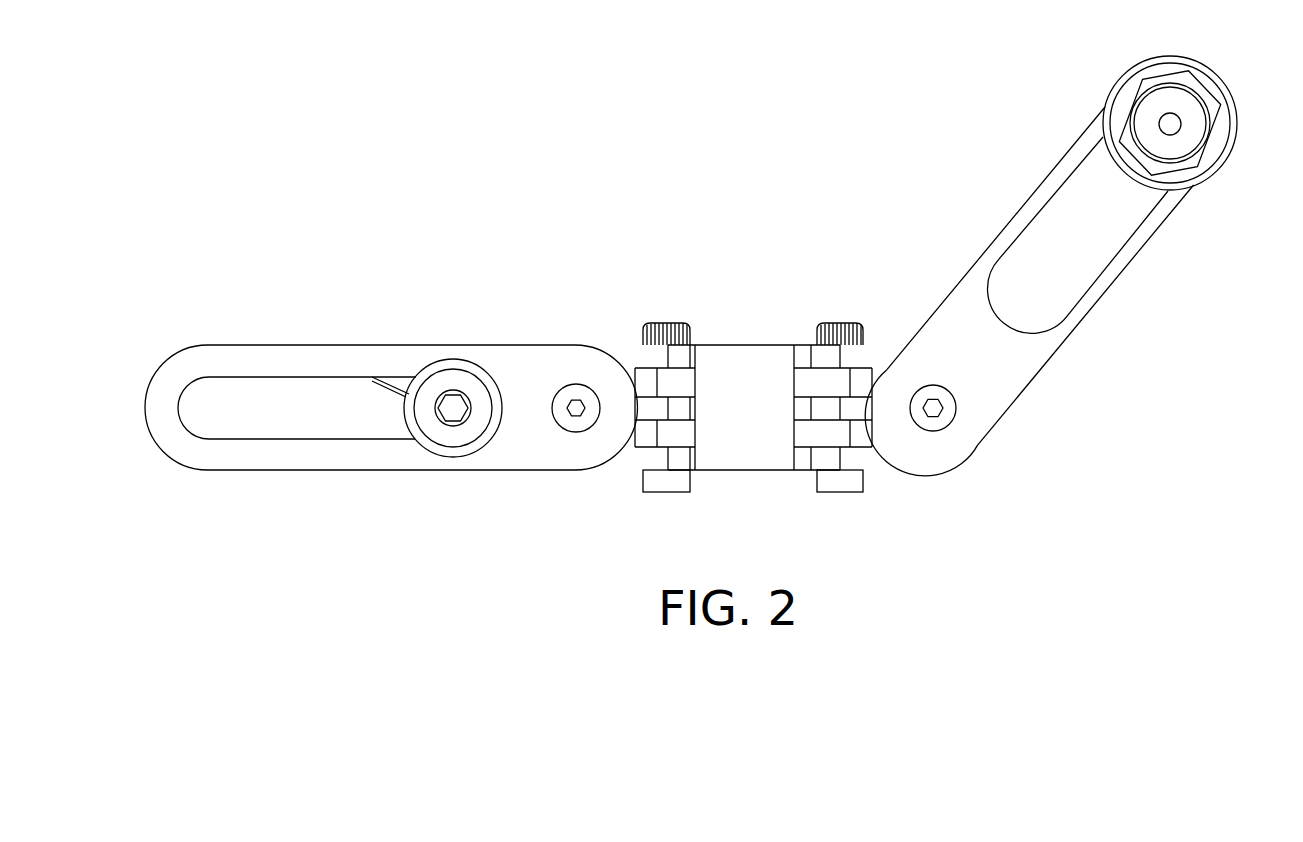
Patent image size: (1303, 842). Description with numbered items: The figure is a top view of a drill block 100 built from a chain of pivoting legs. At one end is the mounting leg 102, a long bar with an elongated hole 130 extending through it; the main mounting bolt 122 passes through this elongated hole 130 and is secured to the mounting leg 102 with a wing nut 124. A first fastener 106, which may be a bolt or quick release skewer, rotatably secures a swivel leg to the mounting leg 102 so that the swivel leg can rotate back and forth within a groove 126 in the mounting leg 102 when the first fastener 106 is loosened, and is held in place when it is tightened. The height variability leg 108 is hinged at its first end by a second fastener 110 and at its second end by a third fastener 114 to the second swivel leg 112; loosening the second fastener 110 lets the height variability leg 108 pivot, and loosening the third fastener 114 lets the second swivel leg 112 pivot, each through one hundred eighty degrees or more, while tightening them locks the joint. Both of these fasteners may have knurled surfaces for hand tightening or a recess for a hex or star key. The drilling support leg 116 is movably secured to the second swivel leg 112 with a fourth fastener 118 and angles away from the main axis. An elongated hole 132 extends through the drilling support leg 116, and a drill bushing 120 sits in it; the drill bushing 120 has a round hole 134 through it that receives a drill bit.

The drill block 100 is at (318, 210).
The mounting leg 102 is at (180, 362).
The first fastener 106 is at (573, 383).
The height variability leg 108 is at (742, 452).
The second fastener 110 is at (668, 322).
The second swivel leg 112 is at (820, 358).
The third fastener 114 is at (840, 322).
The drilling support leg 116 is at (1017, 377).
The fourth fastener 118 is at (938, 432).
The drill bushing 120 is at (1135, 107).
The main mounting bolt 122 is at (453, 438).
The wing nut 124 is at (403, 380).
The groove 126 is at (653, 357).
The elongated hole 130 is at (283, 403).
The elongated hole 132 is at (1072, 195).
The round hole 134 is at (1175, 127).